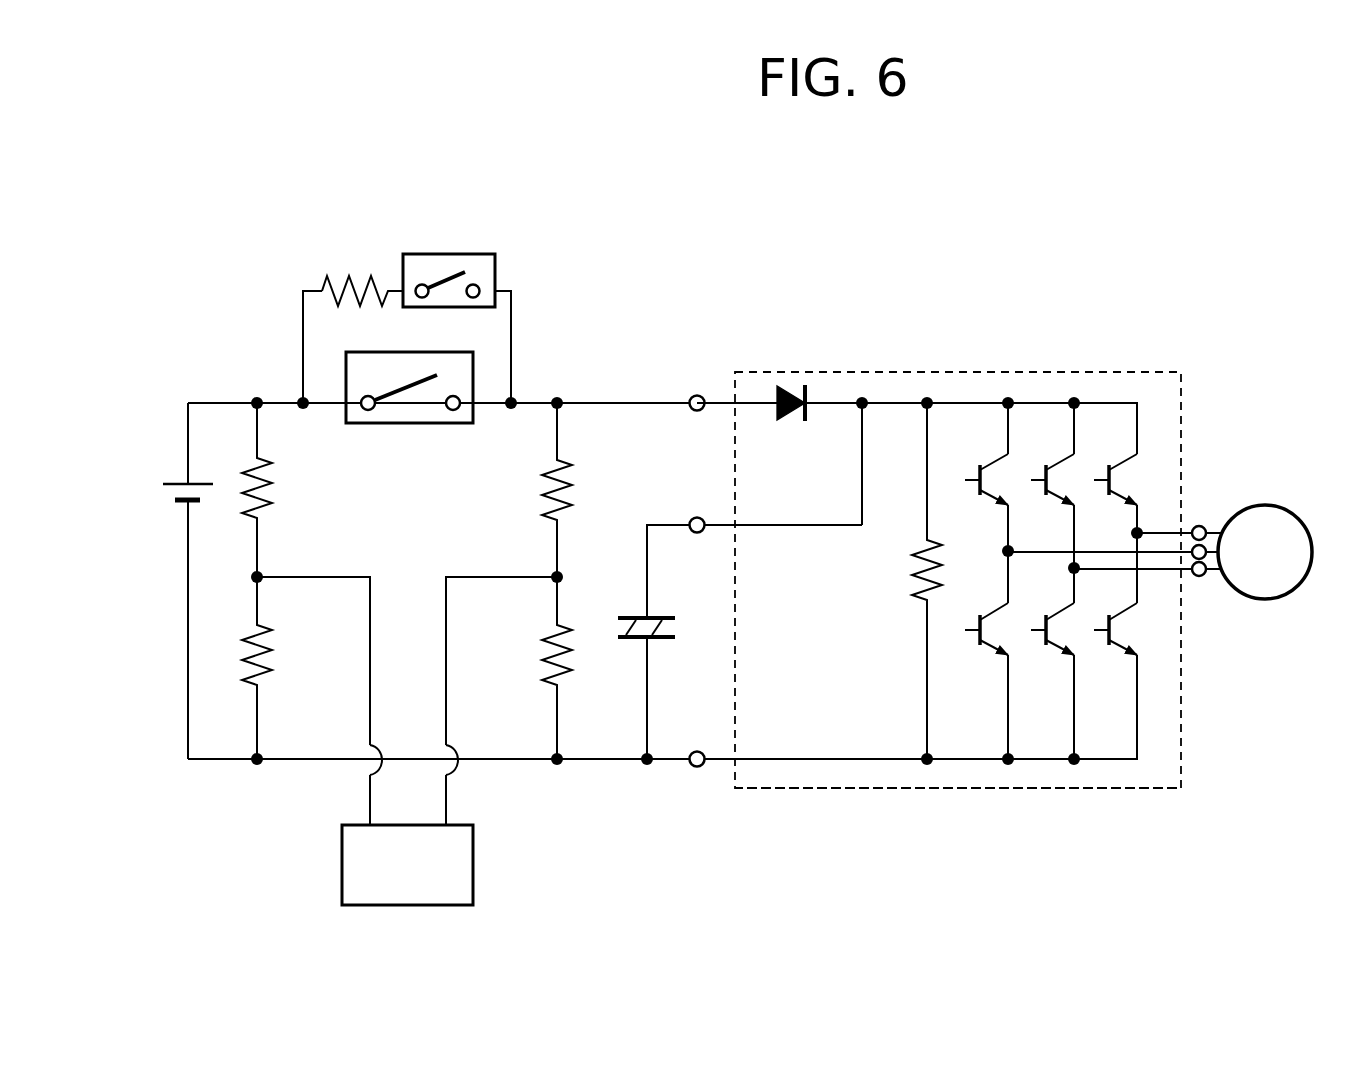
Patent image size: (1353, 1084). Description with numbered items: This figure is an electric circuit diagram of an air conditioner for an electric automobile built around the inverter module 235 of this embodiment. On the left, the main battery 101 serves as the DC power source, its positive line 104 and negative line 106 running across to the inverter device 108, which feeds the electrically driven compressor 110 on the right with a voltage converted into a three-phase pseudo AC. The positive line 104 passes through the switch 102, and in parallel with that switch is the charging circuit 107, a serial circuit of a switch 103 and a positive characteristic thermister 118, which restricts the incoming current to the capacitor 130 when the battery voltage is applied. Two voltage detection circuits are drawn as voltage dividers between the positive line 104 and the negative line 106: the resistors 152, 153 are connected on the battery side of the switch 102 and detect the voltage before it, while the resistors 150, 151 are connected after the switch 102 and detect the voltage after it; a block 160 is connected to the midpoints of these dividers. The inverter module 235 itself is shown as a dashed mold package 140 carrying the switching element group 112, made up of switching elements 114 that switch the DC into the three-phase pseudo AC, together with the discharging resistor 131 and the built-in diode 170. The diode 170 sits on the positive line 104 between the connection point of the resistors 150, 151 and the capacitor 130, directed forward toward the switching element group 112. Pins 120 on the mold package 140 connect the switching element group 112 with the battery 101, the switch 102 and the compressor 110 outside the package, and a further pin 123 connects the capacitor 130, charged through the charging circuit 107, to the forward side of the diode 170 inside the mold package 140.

The main battery 101 is at (168, 498).
The switch 102 is at (367, 373).
The switch 103 is at (468, 263).
The positive line 104 is at (196, 400).
The negative line 106 is at (188, 765).
The charging circuit 107 is at (390, 287).
The inverter device 108 is at (1089, 477).
The electrically driven compressor 110 is at (1258, 603).
The switching element group 112 is at (1160, 388).
The switching element 114 is at (1065, 430).
The positive characteristic thermister 118 is at (342, 277).
The pins 120 is at (700, 395).
The pin 123 is at (692, 517).
The capacitor 130 is at (633, 640).
The discharging resistor 131 is at (922, 612).
The mold package 140 is at (1183, 728).
The voltage dividing resistor 150 is at (548, 452).
The voltage dividing resistor 151 is at (550, 688).
The voltage dividing resistor 152 is at (244, 478).
The voltage dividing resistor 153 is at (243, 657).
The voltage sensor 160 is at (358, 848).
The diode 170 is at (790, 380).
The inverter module 235 is at (1089, 797).